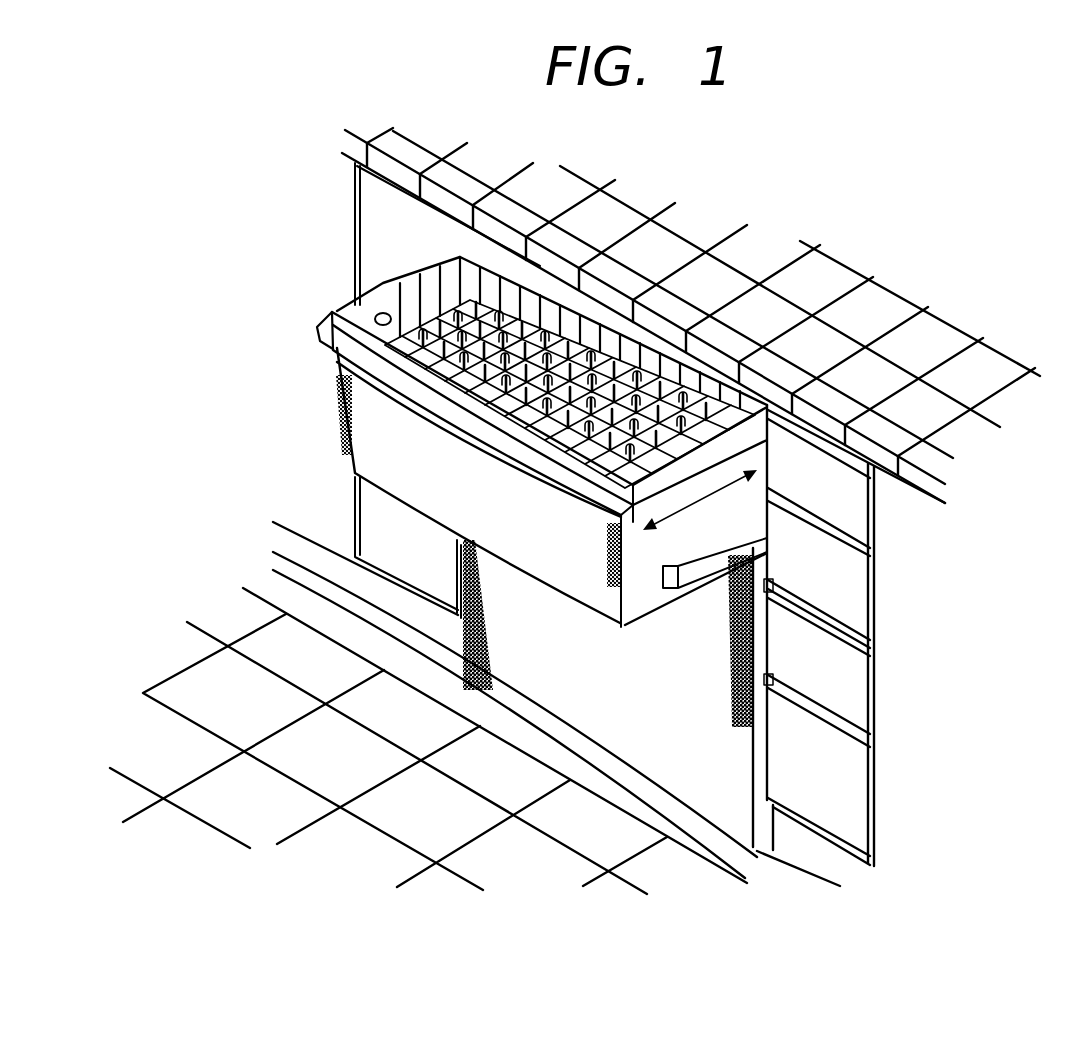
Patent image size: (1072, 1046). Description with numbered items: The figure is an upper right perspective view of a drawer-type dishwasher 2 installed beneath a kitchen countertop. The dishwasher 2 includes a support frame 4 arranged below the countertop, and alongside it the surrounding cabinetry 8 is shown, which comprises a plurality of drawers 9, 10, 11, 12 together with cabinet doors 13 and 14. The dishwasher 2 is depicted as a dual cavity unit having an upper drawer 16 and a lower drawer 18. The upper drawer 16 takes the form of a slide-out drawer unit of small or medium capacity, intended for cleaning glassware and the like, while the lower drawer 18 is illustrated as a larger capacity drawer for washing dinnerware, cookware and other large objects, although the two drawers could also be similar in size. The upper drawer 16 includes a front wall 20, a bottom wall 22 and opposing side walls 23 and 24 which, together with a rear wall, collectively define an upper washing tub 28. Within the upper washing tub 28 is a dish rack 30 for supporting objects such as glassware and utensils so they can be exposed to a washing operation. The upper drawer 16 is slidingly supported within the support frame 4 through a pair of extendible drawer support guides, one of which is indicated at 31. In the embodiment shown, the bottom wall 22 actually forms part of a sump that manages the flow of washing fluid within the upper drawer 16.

The dishwasher 2 is at (283, 300).
The support frame 4 is at (870, 636).
The cabinetry 8 is at (895, 697).
The drawer 9 is at (854, 511).
The drawer 10 is at (860, 590).
The drawer 11 is at (860, 678).
The drawer 12 is at (862, 786).
The cabinet door 13 is at (396, 209).
The cabinet door 14 is at (448, 584).
The upper drawer 16 is at (325, 410).
The lower drawer 18 is at (515, 672).
The front wall 20 is at (391, 330).
The bottom wall 22 is at (533, 260).
The side wall 23 is at (372, 302).
The side wall 24 is at (750, 410).
The upper washing tub 28 is at (460, 257).
The dish rack 30 is at (630, 315).
The extendible drawer support guide 31 is at (688, 573).